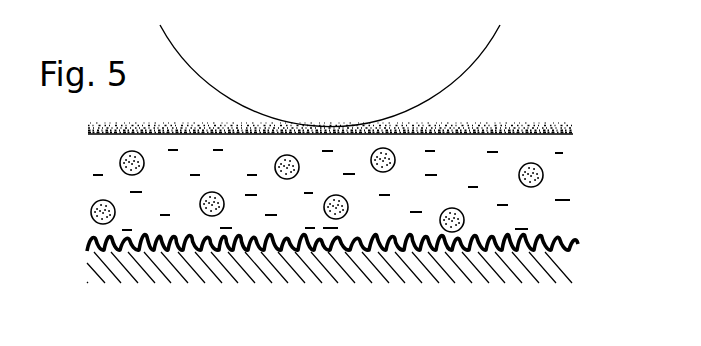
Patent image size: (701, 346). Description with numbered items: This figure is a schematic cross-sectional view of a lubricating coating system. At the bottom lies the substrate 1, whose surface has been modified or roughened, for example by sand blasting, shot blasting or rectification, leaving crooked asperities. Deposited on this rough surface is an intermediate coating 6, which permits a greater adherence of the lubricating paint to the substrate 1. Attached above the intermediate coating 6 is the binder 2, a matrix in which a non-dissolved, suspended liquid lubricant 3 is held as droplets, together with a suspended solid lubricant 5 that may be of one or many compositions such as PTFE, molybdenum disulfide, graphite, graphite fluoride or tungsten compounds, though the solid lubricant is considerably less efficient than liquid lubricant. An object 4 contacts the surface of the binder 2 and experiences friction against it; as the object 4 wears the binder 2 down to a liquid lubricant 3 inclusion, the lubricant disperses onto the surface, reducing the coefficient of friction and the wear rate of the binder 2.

The substrate 1 is at (86, 268).
The binder 2 is at (347, 190).
The liquid lubricant inclusion 3 is at (93, 212).
The object 4 is at (365, 45).
The solid lubricant 5 is at (566, 152).
The intermediate coating 6 is at (578, 240).